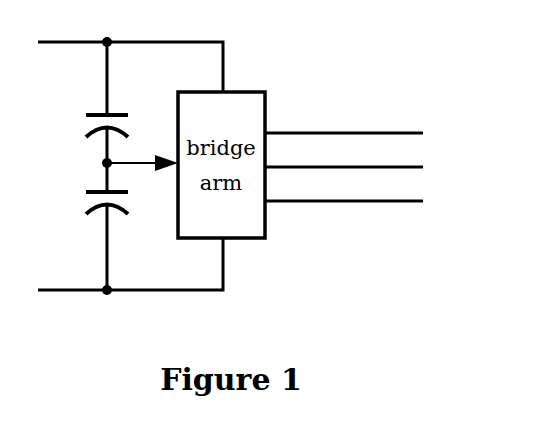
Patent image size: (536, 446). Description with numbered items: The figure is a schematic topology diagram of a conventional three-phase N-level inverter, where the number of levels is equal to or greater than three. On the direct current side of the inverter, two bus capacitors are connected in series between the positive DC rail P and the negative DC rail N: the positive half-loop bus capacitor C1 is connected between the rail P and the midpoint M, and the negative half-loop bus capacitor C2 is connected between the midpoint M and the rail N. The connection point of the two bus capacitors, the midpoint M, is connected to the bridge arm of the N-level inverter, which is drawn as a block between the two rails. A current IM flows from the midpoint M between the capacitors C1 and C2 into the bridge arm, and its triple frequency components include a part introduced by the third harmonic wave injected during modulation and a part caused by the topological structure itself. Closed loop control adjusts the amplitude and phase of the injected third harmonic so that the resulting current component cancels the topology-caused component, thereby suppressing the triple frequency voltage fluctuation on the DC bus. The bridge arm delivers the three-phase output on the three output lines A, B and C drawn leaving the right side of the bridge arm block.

The positive DC bus node P is at (130, 51).
The negative DC bus node N is at (130, 281).
The midpoint M is at (97, 165).
The positive half-loop bus capacitor C1 is at (91, 102).
The negative half-loop bus capacitor C2 is at (89, 226).
The current flowing into the target inverter circuit through the midpoint IM is at (142, 181).
The phase A output A is at (344, 119).
The phase B output B is at (344, 155).
The phase C output C is at (344, 190).